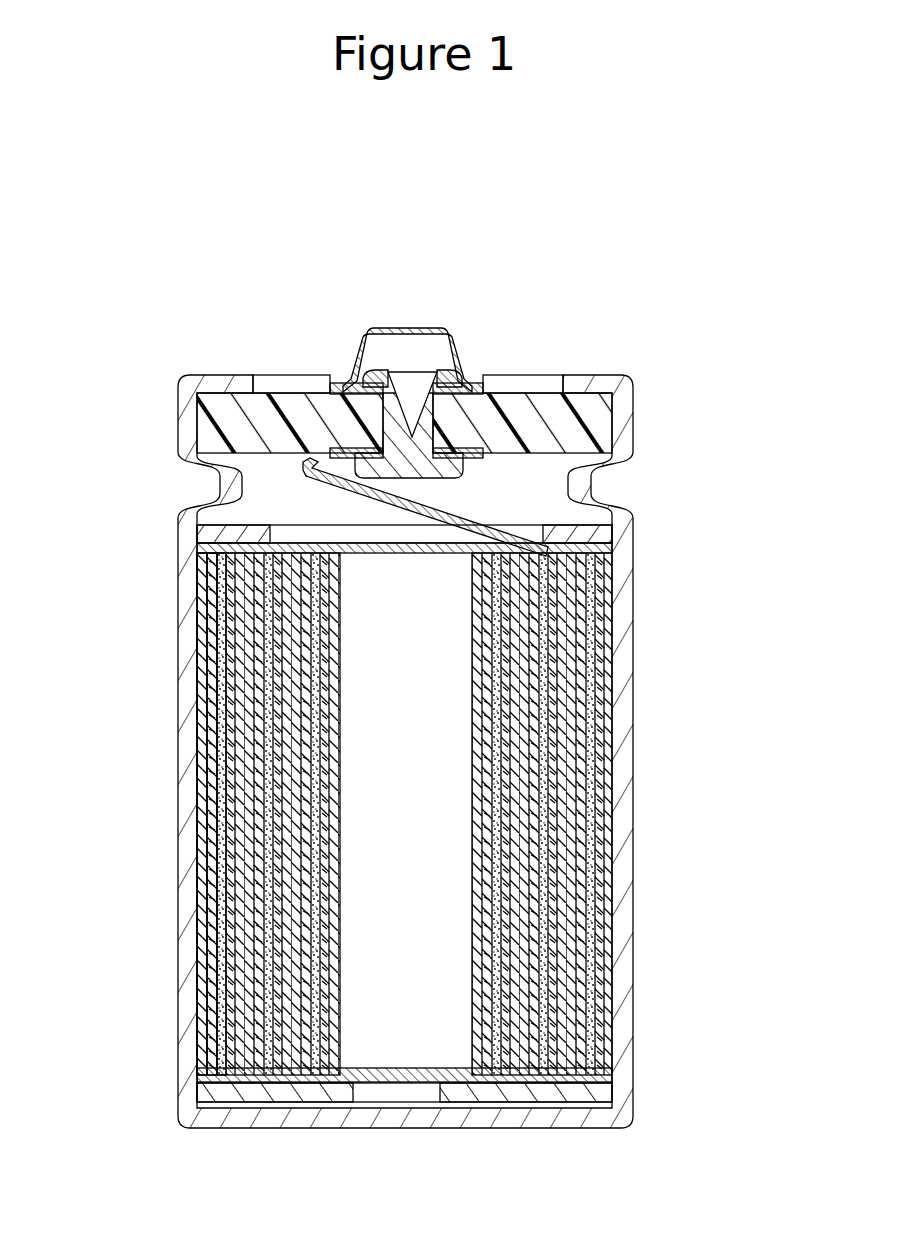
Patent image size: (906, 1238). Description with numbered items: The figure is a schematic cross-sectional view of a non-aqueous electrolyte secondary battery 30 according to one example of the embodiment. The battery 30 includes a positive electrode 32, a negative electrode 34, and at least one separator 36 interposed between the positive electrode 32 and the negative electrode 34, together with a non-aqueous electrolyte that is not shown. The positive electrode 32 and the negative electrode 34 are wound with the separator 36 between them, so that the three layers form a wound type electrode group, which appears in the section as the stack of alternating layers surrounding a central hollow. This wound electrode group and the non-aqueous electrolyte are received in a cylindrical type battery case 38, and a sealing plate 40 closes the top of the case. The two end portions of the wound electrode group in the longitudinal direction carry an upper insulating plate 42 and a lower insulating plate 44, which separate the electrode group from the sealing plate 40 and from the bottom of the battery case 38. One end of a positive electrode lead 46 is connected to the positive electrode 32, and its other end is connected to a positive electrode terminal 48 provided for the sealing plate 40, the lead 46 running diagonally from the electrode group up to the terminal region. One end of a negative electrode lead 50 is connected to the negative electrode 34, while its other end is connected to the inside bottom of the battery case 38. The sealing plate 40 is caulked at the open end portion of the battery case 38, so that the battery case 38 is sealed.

The non-aqueous electrolyte secondary battery 30 is at (430, 197).
The positive electrode 32 is at (340, 812).
The negative electrode 34 is at (216, 700).
The separator 36 is at (202, 838).
The battery case 38 is at (633, 858).
The sealing plate 40 is at (522, 390).
The upper insulating plate 42 is at (561, 525).
The lower insulating plate 44 is at (546, 1108).
The positive electrode lead 46 is at (401, 512).
The positive electrode terminal 48 is at (405, 328).
The negative electrode lead 50 is at (202, 652).